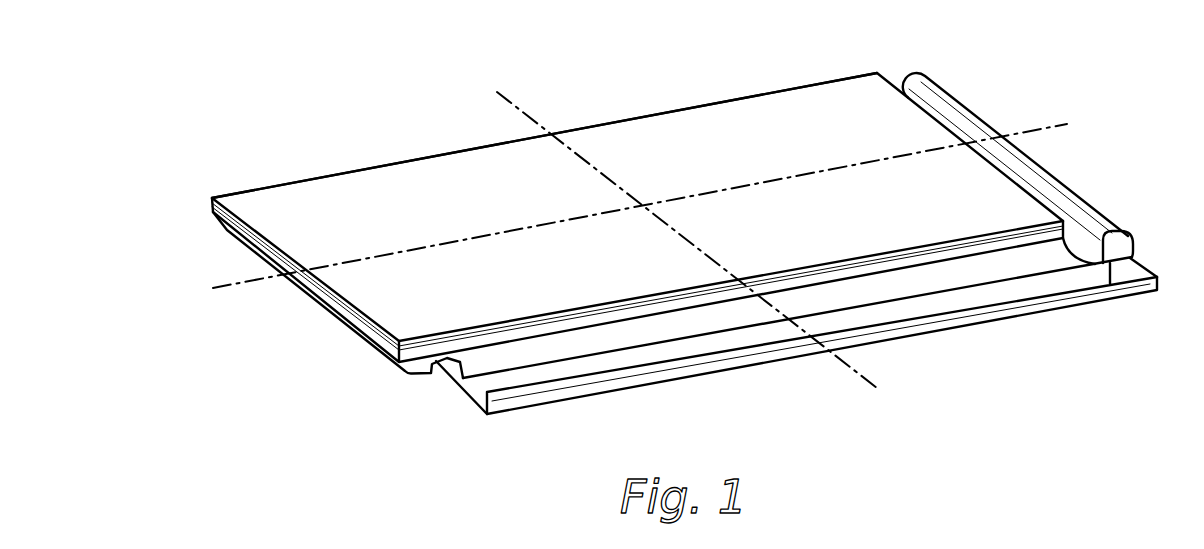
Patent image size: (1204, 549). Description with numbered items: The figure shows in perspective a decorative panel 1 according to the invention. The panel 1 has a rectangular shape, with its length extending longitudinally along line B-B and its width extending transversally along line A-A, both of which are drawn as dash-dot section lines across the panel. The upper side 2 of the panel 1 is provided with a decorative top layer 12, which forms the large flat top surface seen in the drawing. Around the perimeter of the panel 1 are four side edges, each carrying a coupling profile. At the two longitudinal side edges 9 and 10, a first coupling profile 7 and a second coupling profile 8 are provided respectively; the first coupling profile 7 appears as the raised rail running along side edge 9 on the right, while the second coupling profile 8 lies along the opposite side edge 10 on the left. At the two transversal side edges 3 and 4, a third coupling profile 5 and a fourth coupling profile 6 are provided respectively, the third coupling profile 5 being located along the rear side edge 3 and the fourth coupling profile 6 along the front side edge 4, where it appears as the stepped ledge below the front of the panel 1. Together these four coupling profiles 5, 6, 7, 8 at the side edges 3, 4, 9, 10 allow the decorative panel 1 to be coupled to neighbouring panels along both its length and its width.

The decorative panel 1 is at (672, 226).
The upper side 2 is at (630, 182).
The side edge 3 is at (692, 100).
The side edge 4 is at (983, 327).
The third coupling profile 5 is at (622, 118).
The fourth coupling profile 6 is at (688, 372).
The first coupling profile 7 is at (970, 110).
The second coupling profile 8 is at (315, 293).
The side edge 9 is at (1088, 190).
The side edge 10 is at (352, 338).
The decorative top layer 12 is at (767, 132).